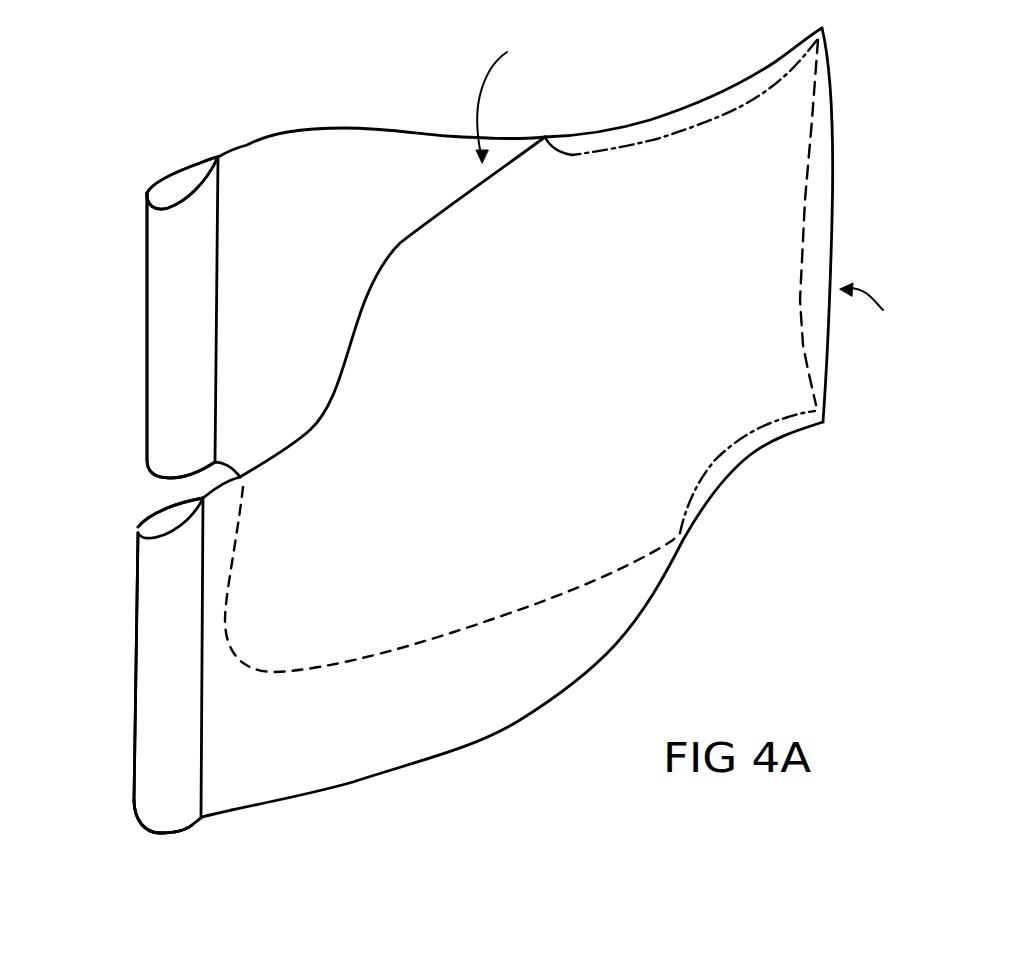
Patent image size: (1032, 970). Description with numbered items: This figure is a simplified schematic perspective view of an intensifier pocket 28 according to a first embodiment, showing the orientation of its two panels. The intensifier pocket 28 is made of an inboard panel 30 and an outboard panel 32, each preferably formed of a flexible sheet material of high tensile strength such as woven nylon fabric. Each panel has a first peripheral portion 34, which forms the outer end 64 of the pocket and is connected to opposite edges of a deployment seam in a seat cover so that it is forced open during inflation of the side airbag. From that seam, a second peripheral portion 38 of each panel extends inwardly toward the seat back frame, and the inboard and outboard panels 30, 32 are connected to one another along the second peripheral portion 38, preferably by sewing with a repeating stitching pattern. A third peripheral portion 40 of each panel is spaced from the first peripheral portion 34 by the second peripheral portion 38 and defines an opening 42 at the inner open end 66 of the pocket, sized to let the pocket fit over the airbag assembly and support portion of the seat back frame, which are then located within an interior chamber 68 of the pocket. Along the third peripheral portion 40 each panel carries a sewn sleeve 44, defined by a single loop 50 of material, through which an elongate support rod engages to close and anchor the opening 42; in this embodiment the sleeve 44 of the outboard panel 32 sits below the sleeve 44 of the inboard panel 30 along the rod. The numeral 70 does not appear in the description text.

The intensifier pocket 28 is at (567, 200).
The inboard panel 30 is at (350, 150).
The outboard panel 32 is at (487, 693).
The first peripheral portion 34 is at (810, 123).
The second peripheral portion 38 is at (677, 127).
The third peripheral portion 40 is at (147, 308).
The opening 42 is at (138, 495).
The sleeve 44 is at (163, 252).
The single loop 50 is at (175, 172).
The outer end 64 is at (878, 303).
The inner open end 66 is at (112, 428).
The interior chamber 68 is at (507, 101).
The inner surface 70 is at (147, 372).